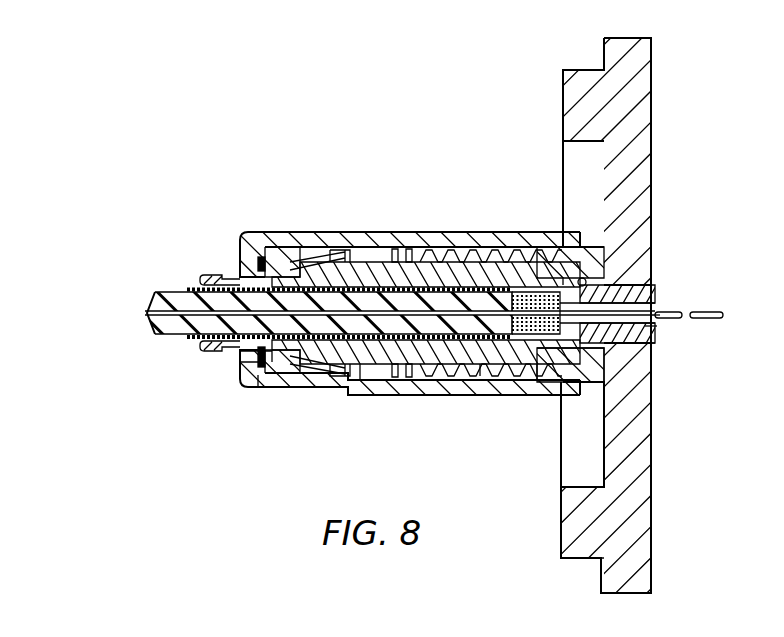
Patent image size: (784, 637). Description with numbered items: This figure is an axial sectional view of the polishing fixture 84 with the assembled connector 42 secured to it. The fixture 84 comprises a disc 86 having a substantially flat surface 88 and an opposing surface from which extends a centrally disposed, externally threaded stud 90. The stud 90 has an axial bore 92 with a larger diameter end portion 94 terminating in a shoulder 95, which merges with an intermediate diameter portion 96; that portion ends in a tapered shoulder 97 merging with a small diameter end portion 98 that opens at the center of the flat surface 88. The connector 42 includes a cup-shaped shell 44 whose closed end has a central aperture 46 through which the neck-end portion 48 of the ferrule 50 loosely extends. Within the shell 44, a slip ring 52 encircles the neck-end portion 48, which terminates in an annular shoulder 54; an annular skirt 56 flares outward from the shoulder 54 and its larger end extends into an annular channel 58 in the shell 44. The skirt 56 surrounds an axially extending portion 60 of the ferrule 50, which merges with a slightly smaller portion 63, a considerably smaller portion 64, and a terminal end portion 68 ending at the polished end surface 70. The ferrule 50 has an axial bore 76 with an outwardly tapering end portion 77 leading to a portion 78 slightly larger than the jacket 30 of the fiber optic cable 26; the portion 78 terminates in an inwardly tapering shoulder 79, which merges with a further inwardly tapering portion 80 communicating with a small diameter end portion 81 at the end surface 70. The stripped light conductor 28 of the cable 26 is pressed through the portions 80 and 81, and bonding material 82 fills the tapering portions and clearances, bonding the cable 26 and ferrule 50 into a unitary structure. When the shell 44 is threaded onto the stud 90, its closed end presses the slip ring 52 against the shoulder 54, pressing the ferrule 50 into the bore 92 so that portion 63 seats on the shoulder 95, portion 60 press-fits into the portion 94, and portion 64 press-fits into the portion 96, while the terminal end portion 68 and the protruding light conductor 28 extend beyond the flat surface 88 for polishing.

The fiber optic cable 26 is at (138, 301).
The light conductor 28 is at (165, 320).
The outer jacket 30 is at (175, 333).
The connector 42 is at (392, 318).
The cup-shaped shell 44 is at (292, 232).
The aperture 46 is at (250, 273).
The neck-end portion 48 is at (215, 276).
The ferrule 50 is at (368, 262).
The slip ring 52 is at (264, 368).
The annular shoulder 54 is at (240, 362).
The annular skirt 56 is at (315, 372).
The annular channel 58 is at (265, 387).
The axially extending portion 60 is at (398, 250).
The slightly smaller diameter portion 63 is at (488, 292).
The smaller diameter portion 64 is at (590, 350).
The terminal end portion 68 is at (657, 328).
The end surface 70 is at (648, 290).
The axial bore 76 is at (412, 377).
The outwardly tapering end portion 77 is at (205, 340).
The bore portion 78 is at (352, 376).
The inwardly tapering shoulder 79 is at (518, 292).
The inwardly tapering portion 80 is at (534, 370).
The small diameter end portion 81 is at (658, 315).
The bonding material 82 is at (195, 287).
The polishing fixture 84 is at (660, 56).
The disc 86 is at (643, 108).
The flat surface 88 is at (652, 143).
The stud 90 is at (375, 380).
The axial bore 92 is at (460, 376).
The larger diameter end portion 94 is at (448, 265).
The shoulder 95 is at (505, 376).
The intermediate diameter portion 96 is at (584, 277).
The tapered shoulder 97 is at (655, 290).
The small diameter end portion 98 is at (653, 328).